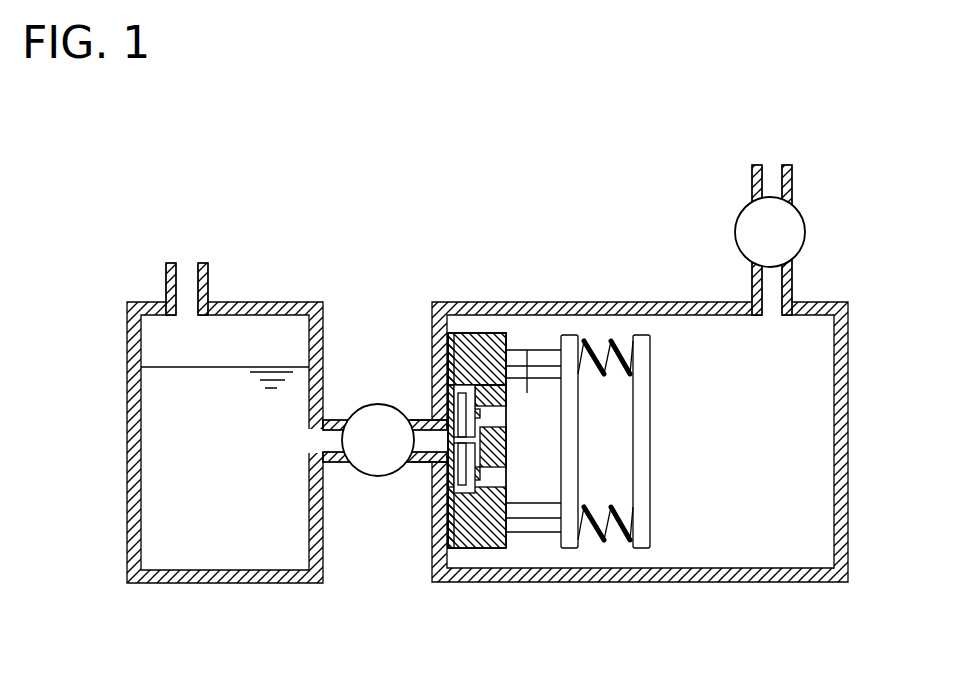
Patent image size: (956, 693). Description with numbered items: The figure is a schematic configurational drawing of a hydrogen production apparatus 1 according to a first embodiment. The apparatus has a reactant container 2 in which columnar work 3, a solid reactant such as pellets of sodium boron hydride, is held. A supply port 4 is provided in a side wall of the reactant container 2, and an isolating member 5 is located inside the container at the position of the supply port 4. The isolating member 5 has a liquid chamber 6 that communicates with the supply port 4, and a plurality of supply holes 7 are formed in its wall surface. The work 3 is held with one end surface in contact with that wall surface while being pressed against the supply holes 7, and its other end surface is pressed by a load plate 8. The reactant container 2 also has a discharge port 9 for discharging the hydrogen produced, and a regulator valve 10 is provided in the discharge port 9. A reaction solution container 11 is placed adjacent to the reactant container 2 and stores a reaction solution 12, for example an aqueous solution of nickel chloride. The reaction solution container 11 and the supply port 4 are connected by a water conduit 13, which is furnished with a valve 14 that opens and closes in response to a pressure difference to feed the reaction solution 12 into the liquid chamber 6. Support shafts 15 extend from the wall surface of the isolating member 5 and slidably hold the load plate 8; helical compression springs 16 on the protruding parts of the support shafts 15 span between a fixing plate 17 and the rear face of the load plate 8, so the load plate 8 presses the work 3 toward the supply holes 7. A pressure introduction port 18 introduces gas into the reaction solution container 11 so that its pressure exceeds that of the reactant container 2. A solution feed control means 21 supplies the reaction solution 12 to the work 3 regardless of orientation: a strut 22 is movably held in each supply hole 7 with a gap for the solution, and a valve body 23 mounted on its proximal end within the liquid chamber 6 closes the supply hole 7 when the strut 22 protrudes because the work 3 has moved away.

The hydrogen production apparatus 1 is at (847, 257).
The reactant container 2 is at (795, 572).
The columnar work 3 is at (527, 393).
The supply port 4 is at (417, 417).
The isolating member 5 is at (480, 335).
The liquid chamber 6 is at (433, 540).
The supply holes 7 is at (505, 338).
The load plate 8 is at (568, 548).
The discharge port 9 is at (767, 177).
The regulator valve 10 is at (748, 217).
The reaction solution container 11 is at (247, 578).
The reaction solution 12 is at (187, 540).
The water conduit 13 is at (334, 418).
The valve 14 is at (380, 465).
The support shafts 15 is at (543, 352).
The helical compression springs 16 is at (615, 350).
The fixing plate 17 is at (648, 548).
The pressure introduction port 18 is at (187, 272).
The solution feed control means 21 is at (478, 553).
The strut 22 is at (462, 400).
The valve body 23 is at (450, 385).